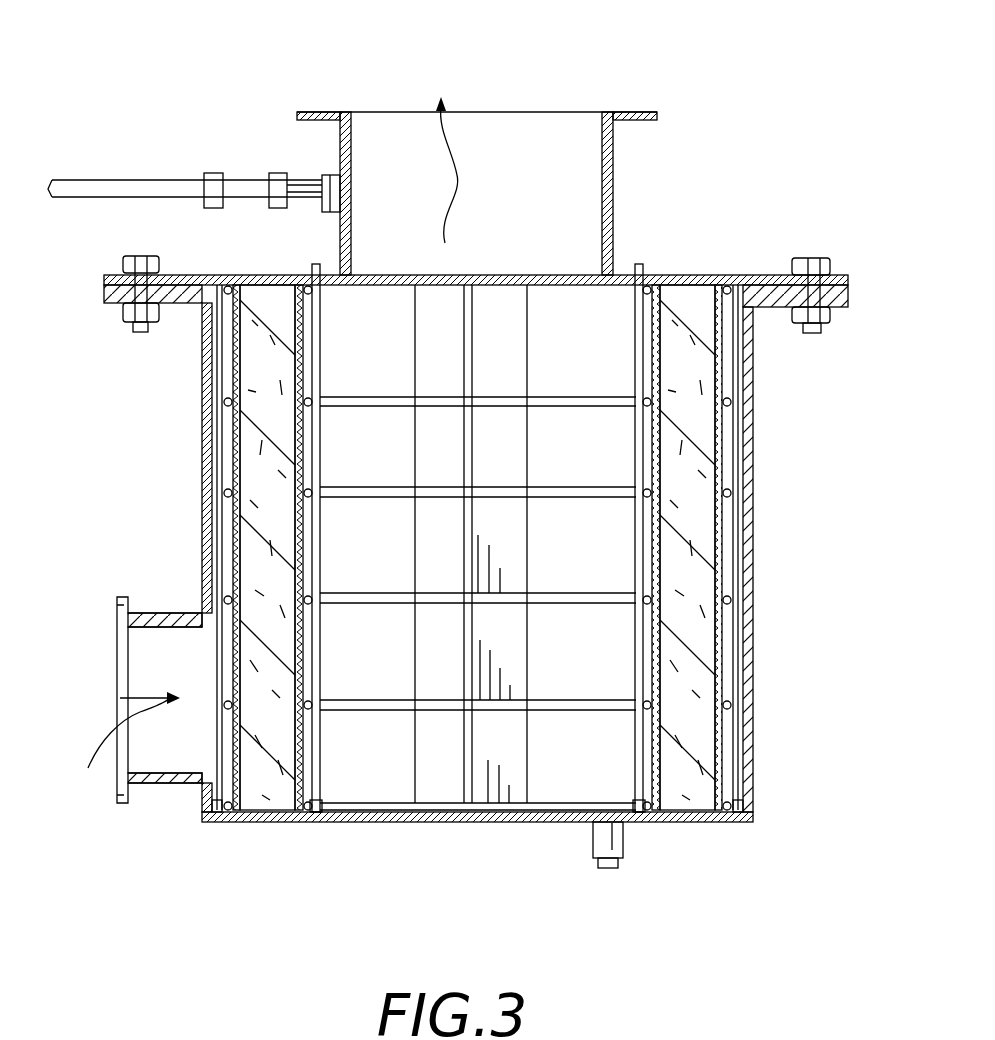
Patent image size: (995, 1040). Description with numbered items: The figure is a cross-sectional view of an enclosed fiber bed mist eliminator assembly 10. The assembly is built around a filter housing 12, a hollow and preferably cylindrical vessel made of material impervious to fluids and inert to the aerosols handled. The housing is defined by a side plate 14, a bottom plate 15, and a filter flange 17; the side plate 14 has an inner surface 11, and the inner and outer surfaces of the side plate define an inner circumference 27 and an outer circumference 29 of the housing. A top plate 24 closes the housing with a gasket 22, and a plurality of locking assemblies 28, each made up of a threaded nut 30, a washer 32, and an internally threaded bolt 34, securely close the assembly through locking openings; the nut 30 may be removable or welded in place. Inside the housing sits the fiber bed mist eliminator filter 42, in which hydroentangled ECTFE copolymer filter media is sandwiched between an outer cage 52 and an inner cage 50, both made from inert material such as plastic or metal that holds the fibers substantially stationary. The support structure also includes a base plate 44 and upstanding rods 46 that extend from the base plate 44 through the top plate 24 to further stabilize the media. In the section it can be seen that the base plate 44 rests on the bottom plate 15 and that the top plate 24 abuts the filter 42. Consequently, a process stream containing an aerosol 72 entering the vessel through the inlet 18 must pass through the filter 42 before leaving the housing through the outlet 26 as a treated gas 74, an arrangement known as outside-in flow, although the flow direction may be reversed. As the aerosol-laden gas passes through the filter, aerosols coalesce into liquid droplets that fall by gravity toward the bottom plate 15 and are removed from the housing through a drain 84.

The fiber bed mist eliminator assembly 10 is at (864, 220).
The inner surface 11 is at (740, 418).
The filter housing 12 is at (760, 463).
The side plate 14 is at (755, 532).
The bottom plate 15 is at (262, 822).
The filter flange 17 is at (767, 307).
The inlet 18 is at (120, 655).
The gasket 22 is at (848, 294).
The top plate 24 is at (622, 272).
The outlet 26 is at (372, 112).
The inner circumference 27 is at (199, 385).
The locking assembly 28 is at (108, 262).
The outer circumference 29 is at (200, 307).
The threaded nut 30 is at (140, 256).
The washer 32 is at (106, 292).
The internally threaded bolt 34 is at (123, 320).
The fiber bed mist eliminator filter 42 is at (710, 606).
The base plate 44 is at (365, 822).
The upstanding rods 46 is at (312, 266).
The inner cage 50 is at (315, 822).
The outer cage 52 is at (216, 815).
The aerosol 72 is at (120, 742).
The treated gas 74 is at (455, 128).
The drain 84 is at (593, 845).